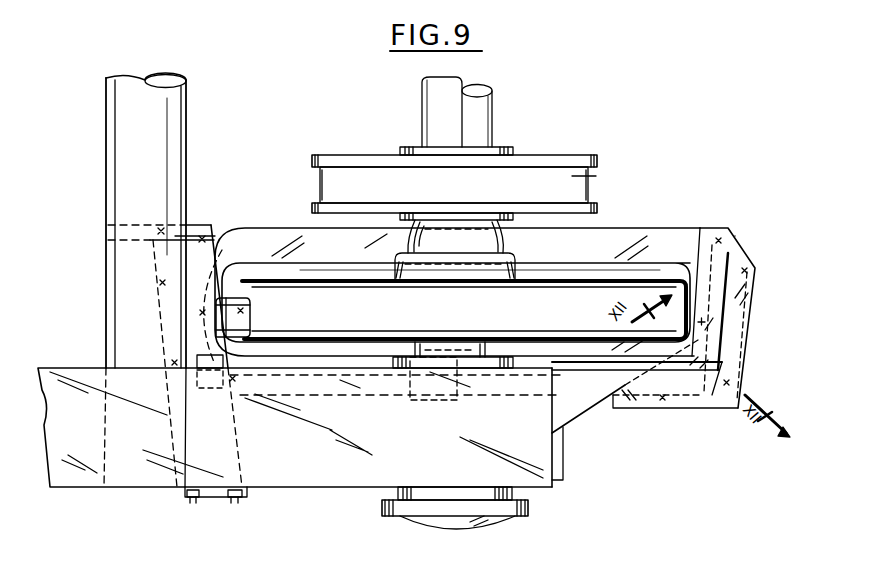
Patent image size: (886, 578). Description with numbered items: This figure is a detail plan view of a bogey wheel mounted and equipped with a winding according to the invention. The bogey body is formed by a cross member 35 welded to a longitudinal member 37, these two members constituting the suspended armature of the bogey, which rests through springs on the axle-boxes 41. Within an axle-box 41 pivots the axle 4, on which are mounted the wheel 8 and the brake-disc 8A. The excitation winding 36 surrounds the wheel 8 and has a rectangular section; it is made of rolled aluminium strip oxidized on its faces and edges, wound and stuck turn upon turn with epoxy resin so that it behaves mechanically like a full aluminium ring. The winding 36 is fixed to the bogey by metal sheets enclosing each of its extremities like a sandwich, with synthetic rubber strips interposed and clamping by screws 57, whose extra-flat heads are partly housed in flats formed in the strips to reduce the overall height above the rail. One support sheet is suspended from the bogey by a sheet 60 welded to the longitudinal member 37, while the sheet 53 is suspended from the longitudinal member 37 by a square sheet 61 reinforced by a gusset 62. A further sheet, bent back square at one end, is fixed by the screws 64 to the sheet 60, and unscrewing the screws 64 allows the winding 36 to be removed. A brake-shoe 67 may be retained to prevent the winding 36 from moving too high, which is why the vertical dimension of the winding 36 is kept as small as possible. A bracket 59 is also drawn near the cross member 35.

The cross member 35 is at (130, 137).
The bracket 59 is at (206, 222).
The axle 4 is at (430, 106).
The brake-disc 8A is at (566, 185).
The excitation winding 36 is at (632, 240).
The square sheet 61 is at (735, 292).
The brake-shoe 67 is at (250, 318).
The wheel 8 is at (452, 326).
The longitudinal member 37 is at (388, 442).
The gusset 62 is at (577, 407).
The screws 57 is at (677, 398).
The metal sheet 53 is at (728, 402).
The axle-box 41 is at (517, 494).
The sheet 60 is at (187, 496).
The screws 64 is at (224, 522).